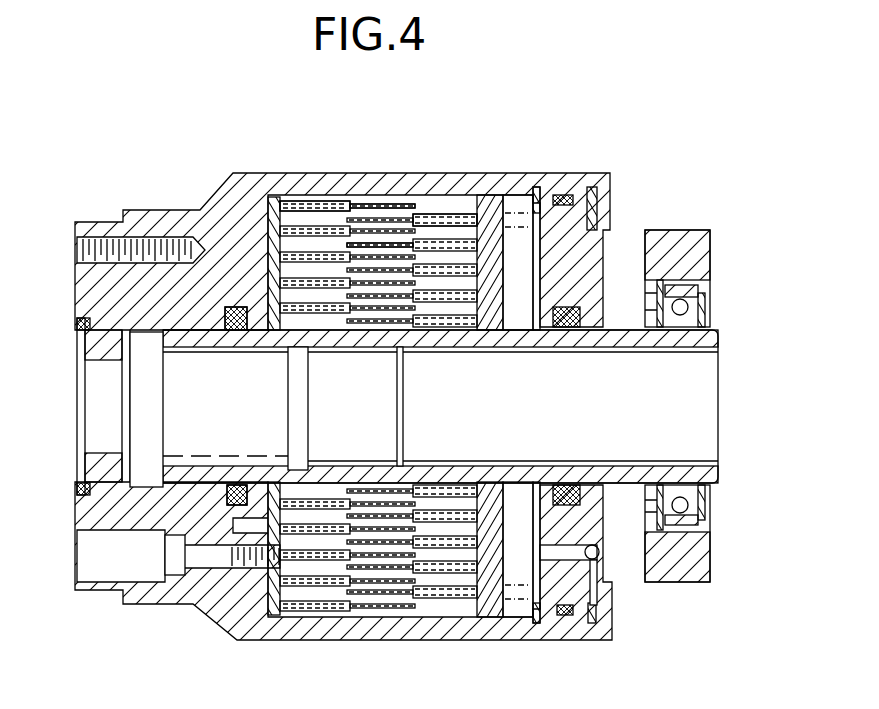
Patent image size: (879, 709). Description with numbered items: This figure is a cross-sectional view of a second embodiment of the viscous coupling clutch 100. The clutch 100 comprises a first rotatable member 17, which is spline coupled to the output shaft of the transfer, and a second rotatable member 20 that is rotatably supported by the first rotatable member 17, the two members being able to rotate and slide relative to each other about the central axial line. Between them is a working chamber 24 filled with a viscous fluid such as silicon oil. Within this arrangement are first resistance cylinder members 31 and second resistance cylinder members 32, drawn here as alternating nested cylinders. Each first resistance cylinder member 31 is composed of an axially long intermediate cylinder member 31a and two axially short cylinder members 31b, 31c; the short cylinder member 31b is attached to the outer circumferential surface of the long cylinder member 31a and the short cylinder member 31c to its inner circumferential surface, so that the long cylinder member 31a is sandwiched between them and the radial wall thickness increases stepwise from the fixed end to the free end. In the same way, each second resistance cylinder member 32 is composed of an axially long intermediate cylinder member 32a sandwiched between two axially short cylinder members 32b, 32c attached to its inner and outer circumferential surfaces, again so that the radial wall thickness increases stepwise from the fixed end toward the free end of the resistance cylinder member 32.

The viscous coupling clutch 100 is at (592, 154).
The second rotatable member 20 is at (415, 360).
The second resistance cylinder member 32 is at (328, 194).
The axially long (intermediate) cylinder member 32a is at (372, 203).
The axially short (inside) cylinder member 32b is at (288, 195).
The axially short (outside) cylinder member 32c is at (312, 210).
The first resistance cylinder member 31 is at (444, 205).
The axially long (intermediate) cylinder member 31a is at (394, 218).
The axially short (outside) cylinder member 31b is at (466, 215).
The axially short (inside) cylinder member 31c is at (536, 190).
The working chamber 24 is at (437, 325).
The first rotatable member 17 is at (467, 348).